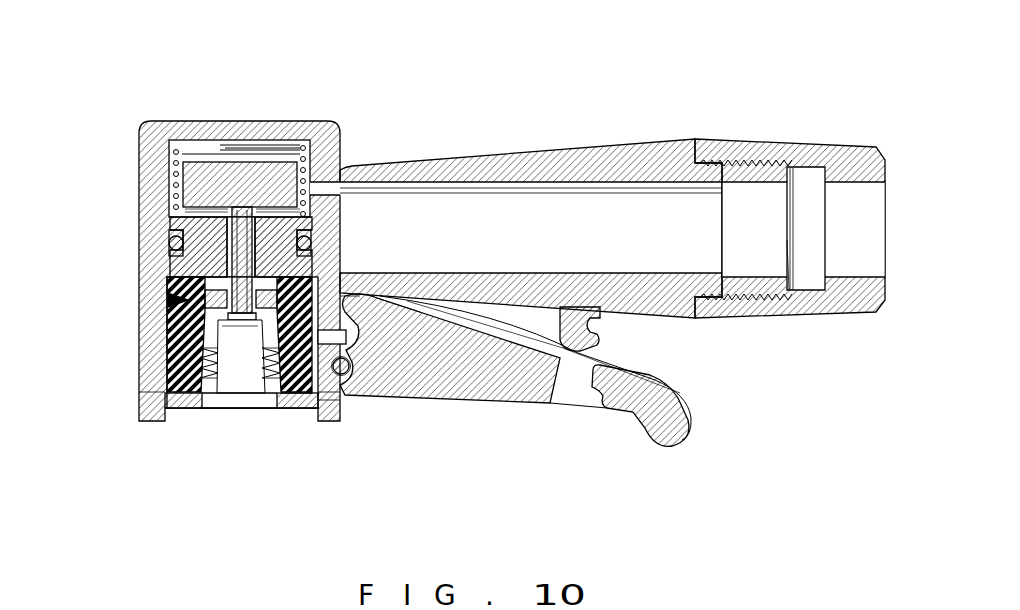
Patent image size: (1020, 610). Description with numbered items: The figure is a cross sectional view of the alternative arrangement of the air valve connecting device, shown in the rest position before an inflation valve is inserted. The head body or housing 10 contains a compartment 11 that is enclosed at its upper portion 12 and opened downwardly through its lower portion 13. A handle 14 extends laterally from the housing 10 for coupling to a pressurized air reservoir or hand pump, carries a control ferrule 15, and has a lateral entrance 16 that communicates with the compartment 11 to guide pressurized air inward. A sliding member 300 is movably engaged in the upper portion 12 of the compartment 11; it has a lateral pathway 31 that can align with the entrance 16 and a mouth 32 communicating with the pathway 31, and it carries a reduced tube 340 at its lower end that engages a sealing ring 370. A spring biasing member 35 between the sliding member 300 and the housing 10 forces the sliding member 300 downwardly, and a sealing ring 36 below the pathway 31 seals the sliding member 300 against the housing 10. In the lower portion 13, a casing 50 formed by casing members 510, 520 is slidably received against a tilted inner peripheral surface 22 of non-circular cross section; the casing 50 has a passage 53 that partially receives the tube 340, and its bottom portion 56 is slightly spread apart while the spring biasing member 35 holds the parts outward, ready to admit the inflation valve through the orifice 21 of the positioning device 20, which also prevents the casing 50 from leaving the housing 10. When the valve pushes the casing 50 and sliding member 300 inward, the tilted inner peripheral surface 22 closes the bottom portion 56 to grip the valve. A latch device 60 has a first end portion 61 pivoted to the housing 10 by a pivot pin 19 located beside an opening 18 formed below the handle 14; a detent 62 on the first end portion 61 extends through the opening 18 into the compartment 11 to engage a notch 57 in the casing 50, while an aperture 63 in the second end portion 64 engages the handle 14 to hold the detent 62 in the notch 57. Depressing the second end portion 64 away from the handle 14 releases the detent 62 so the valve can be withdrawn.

The housing 10 is at (252, 228).
The compartment 11 is at (192, 141).
The upper portion 12 is at (148, 130).
The lower portion 13 is at (147, 393).
The handle 14 is at (546, 157).
The control ferrule 15 is at (808, 146).
The entrance 16 is at (322, 190).
The opening 18 is at (333, 338).
The pivot pin 19 is at (349, 368).
The positioning device 20 is at (291, 408).
The orifice 21 is at (265, 403).
The tilted inner peripheral surface 22 is at (183, 412).
The pathway 31 is at (230, 210).
The mouth 32 is at (262, 150).
The spring biasing member 35 is at (171, 162).
The sealing ring 36 is at (172, 241).
The casing 50 is at (168, 300).
The passage 53 is at (233, 393).
The bottom portion 56 is at (300, 406).
The notch 57 is at (332, 412).
The latch device 60 is at (535, 394).
The first end portion 61 is at (345, 382).
The detent 62 is at (344, 300).
The aperture 63 is at (570, 398).
The second end portion 64 is at (664, 428).
The sliding member 300 is at (235, 170).
The tube 340 is at (207, 296).
The sealing ring 370 is at (170, 262).
The casing member 510 is at (333, 210).
The casing member 520 is at (190, 362).